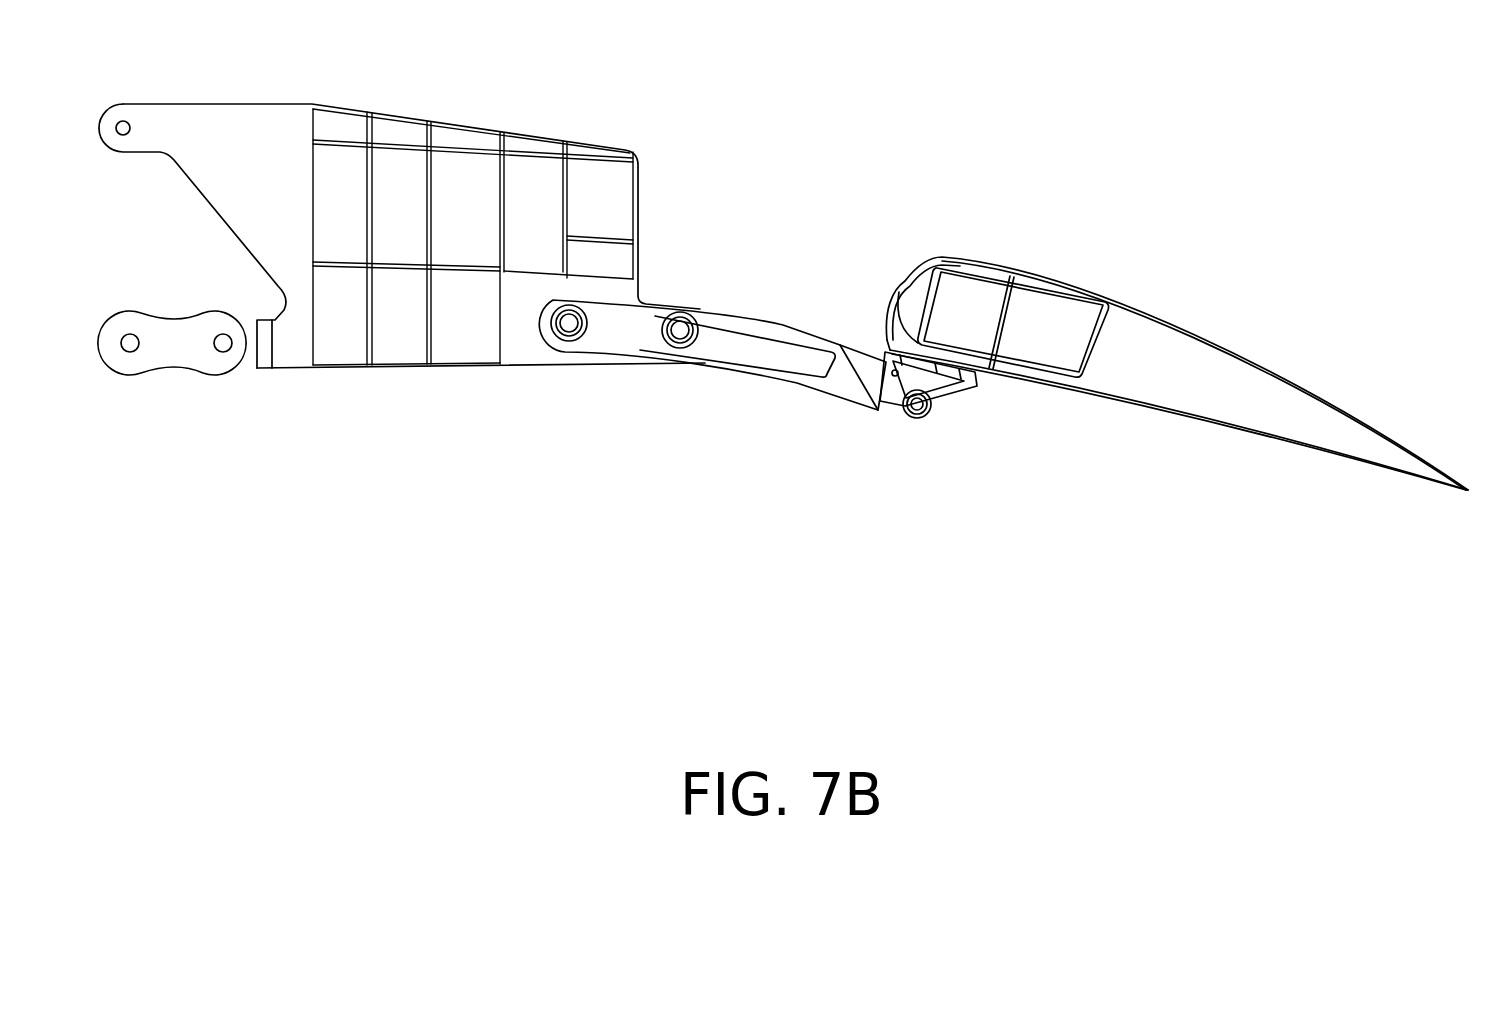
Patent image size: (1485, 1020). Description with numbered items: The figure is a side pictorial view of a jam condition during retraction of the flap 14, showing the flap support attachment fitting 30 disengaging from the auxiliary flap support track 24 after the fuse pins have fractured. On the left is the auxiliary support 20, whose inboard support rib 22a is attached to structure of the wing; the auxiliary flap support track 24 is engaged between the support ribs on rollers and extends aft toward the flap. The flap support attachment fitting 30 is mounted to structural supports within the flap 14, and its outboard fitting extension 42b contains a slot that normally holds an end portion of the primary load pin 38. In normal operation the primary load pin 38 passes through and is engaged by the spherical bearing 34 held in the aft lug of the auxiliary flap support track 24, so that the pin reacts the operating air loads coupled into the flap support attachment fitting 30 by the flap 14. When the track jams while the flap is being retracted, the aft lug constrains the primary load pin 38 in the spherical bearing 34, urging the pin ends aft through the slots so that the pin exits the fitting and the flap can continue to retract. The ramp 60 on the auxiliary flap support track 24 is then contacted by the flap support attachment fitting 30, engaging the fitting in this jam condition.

The flap 14 is at (1198, 367).
The auxiliary support 20 is at (676, 192).
The inboard support rib 22a is at (382, 367).
The auxiliary flap support track 24 is at (763, 372).
The flap support attachment fitting 30 is at (948, 429).
The spherical bearing 34 is at (914, 408).
The primary load pin 38 is at (922, 412).
The outboard fitting extension 42b is at (886, 392).
The ramp 60 is at (861, 368).